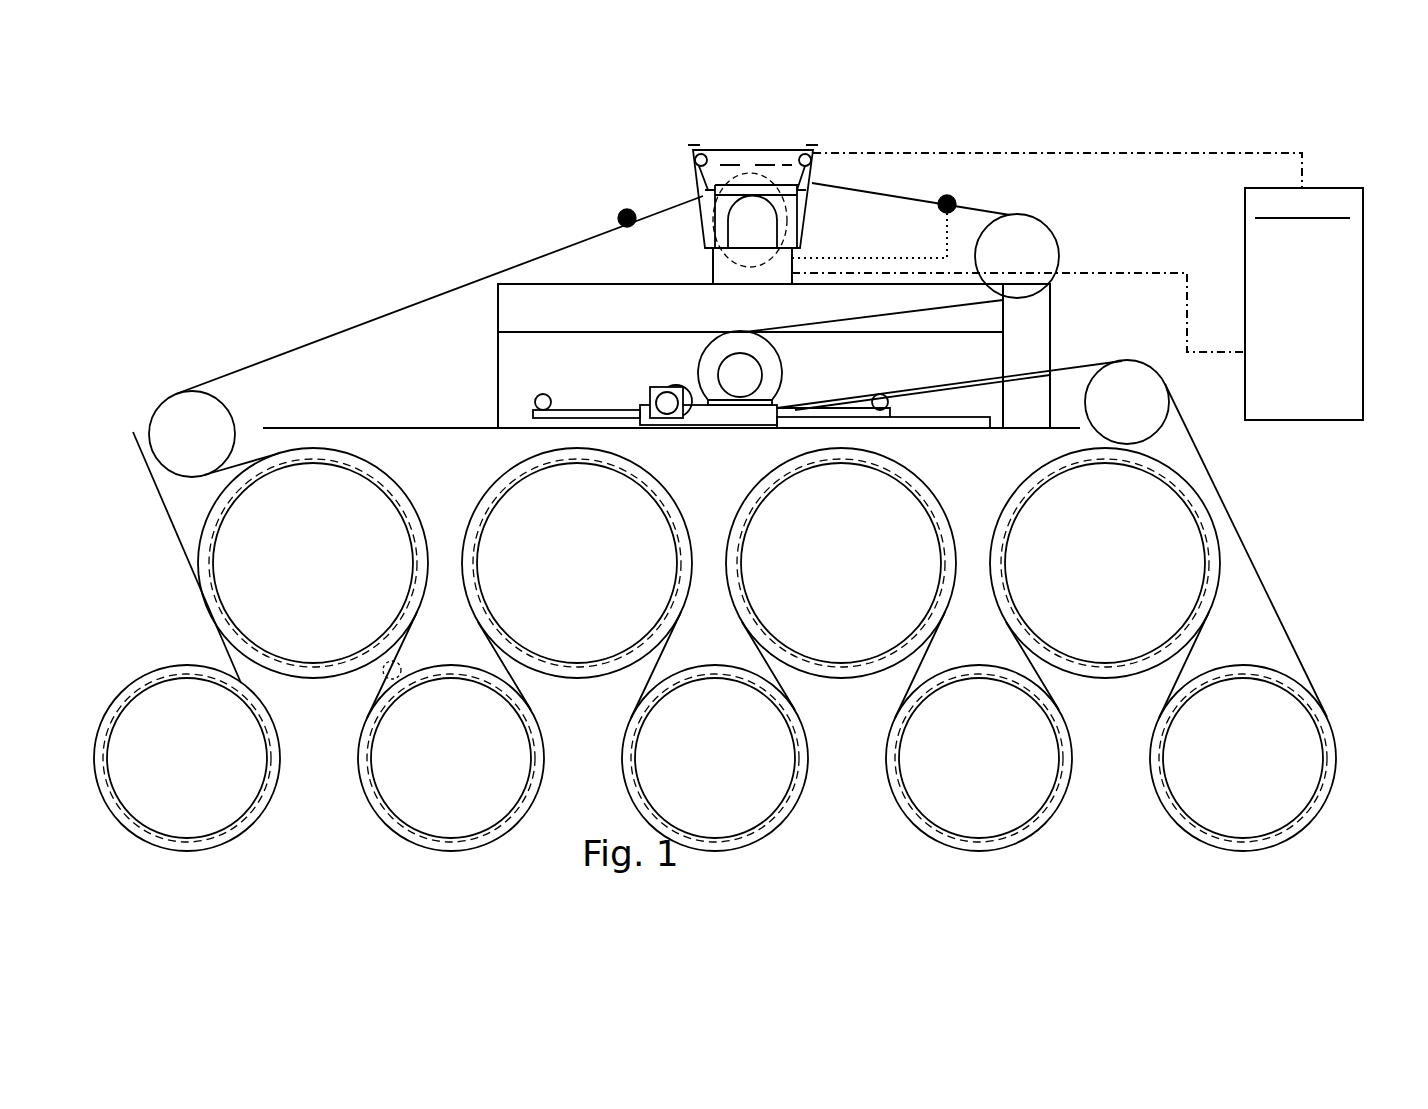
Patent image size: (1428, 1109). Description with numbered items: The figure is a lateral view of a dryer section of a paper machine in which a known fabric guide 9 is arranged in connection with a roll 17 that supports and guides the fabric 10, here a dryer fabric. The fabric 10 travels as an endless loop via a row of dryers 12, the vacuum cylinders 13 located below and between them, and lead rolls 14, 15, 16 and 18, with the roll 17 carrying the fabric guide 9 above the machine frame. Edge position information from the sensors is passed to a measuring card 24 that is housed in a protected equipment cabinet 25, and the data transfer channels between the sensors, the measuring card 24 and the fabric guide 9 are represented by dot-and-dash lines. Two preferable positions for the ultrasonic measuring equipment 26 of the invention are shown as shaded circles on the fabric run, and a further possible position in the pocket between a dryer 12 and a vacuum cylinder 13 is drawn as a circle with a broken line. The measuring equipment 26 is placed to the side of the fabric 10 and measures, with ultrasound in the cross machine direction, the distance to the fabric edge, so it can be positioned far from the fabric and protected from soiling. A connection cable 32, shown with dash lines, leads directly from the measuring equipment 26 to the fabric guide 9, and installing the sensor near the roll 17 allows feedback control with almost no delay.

The fabric guide 9 is at (768, 139).
The fabric 10 is at (395, 312).
The dryers 12 is at (1141, 561).
The vacuum cylinders 13 is at (1272, 767).
The lead roll 14 is at (1109, 418).
The lead roll 15 is at (735, 342).
The lead roll 16 is at (1000, 271).
The roll 17 is at (752, 178).
The lead roll 18 is at (174, 450).
The measuring card 24 is at (1302, 217).
The equipment cabinet 25 is at (1282, 389).
The ultrasonic measuring equipment 26 is at (621, 210).
The connection cable 32 is at (945, 240).